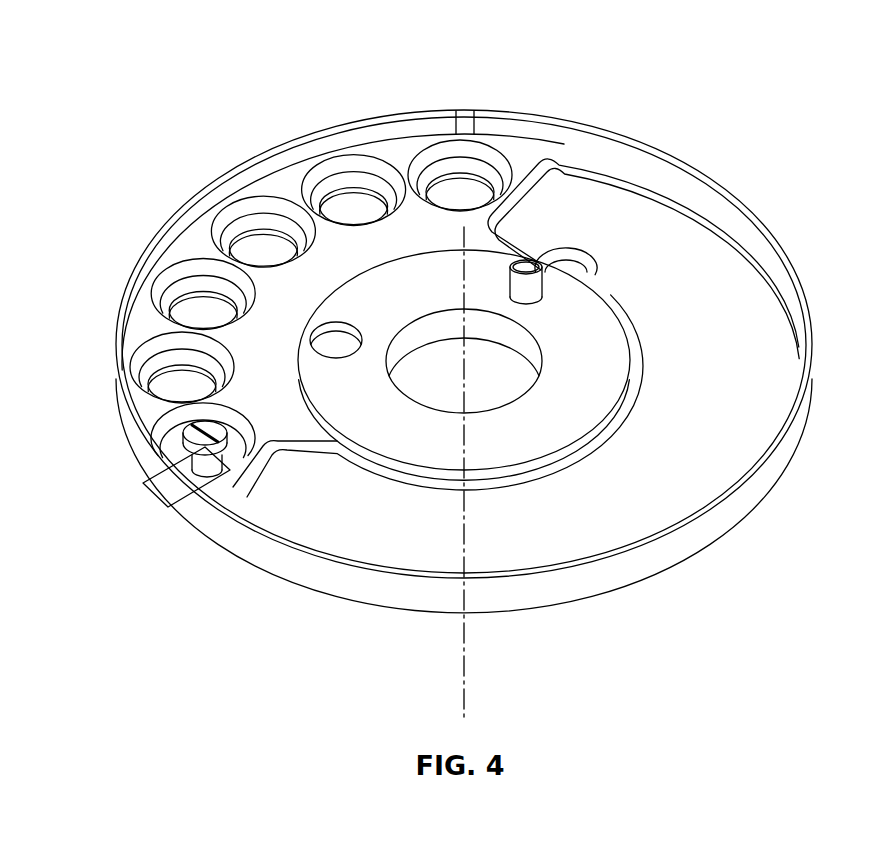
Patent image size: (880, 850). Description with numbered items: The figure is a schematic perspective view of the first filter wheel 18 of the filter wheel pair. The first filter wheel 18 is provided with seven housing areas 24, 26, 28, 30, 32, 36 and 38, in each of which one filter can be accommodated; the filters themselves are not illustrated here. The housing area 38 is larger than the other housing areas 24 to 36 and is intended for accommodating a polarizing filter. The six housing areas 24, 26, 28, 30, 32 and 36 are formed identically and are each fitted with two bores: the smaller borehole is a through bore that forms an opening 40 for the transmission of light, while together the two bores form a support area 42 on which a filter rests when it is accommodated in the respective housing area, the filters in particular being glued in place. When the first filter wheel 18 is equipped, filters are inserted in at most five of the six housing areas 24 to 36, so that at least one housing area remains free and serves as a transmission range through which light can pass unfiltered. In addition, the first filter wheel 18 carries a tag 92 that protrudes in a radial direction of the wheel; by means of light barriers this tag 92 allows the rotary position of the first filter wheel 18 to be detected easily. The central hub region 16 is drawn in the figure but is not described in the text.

The central hub 16 is at (462, 277).
The first filter wheel 18 is at (303, 610).
The housing area 24 is at (163, 438).
The housing area 26 is at (152, 362).
The housing area 28 is at (212, 283).
The housing area 30 is at (270, 220).
The housing area 32 is at (342, 215).
The housing area 36 is at (447, 162).
The housing area 38 is at (633, 240).
The opening 40 is at (322, 214).
The support area 42 is at (368, 182).
The tag 92 is at (162, 484).